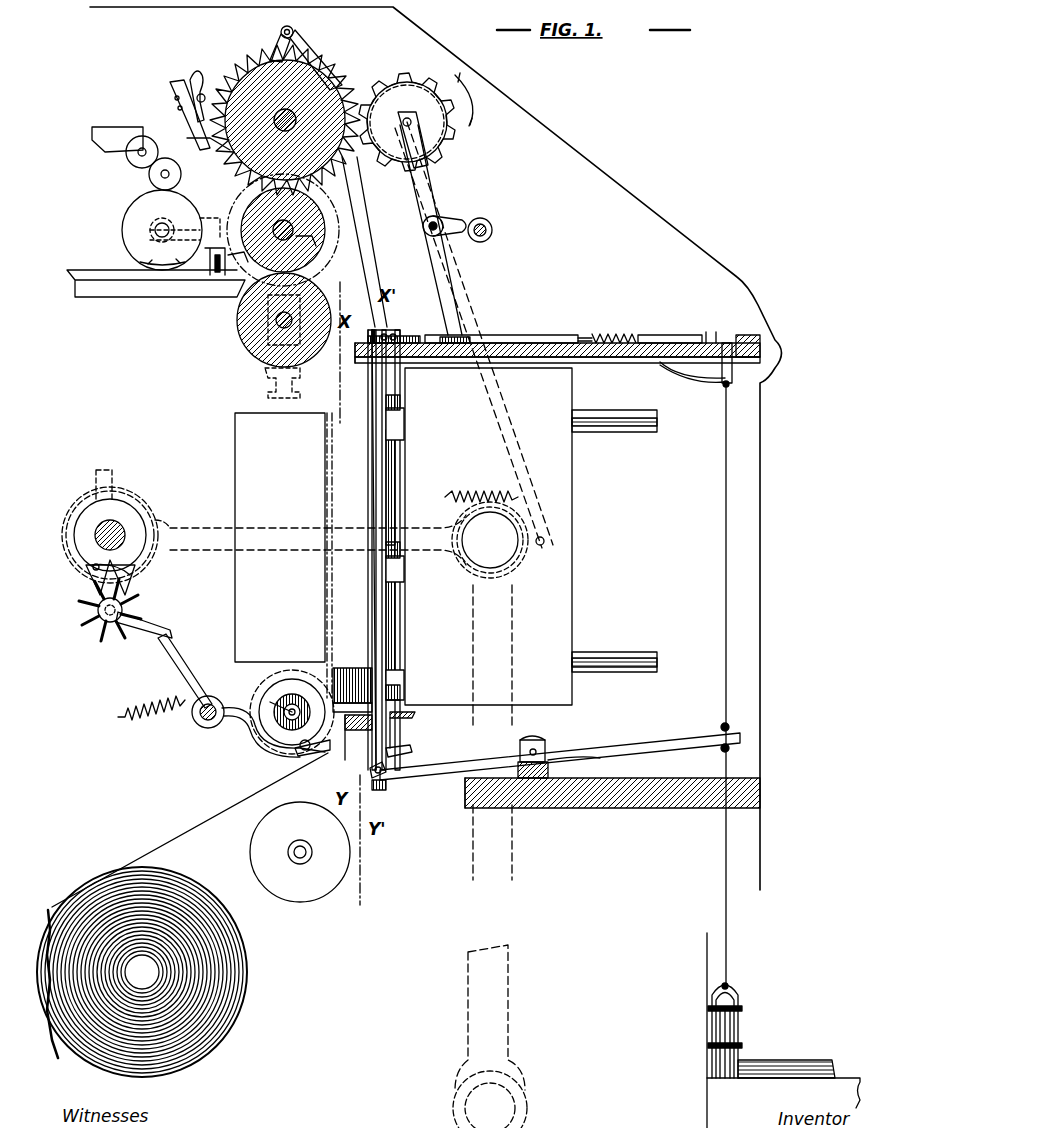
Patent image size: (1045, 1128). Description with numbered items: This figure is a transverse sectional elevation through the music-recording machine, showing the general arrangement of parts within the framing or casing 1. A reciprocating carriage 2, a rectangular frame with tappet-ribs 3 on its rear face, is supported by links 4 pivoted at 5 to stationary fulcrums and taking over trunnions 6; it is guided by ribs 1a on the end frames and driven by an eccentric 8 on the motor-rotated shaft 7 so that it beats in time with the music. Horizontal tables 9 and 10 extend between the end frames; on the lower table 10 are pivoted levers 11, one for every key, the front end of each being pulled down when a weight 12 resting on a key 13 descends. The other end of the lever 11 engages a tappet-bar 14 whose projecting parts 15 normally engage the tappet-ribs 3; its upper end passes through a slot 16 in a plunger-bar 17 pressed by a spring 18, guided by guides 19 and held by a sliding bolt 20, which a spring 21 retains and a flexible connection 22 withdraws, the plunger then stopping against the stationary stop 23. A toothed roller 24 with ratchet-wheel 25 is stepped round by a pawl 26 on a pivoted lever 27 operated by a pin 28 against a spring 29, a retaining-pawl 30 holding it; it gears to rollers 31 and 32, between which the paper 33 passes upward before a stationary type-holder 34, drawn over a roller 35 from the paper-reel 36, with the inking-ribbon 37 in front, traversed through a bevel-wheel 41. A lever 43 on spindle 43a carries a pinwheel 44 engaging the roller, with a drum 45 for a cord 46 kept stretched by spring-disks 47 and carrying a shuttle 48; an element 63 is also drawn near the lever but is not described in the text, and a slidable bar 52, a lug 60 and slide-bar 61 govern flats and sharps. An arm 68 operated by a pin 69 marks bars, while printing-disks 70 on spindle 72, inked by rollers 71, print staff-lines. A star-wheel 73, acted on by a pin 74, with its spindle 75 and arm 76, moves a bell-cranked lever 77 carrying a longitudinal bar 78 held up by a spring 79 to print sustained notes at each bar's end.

The framing or casing 1 is at (436, 448).
The ribs 1a is at (628, 430).
The reciprocating carriage 2 is at (572, 485).
The tappet-ribs 3 is at (398, 412).
The links 4 is at (502, 700).
The pivot 5 is at (500, 1112).
The trunnions 6 is at (475, 548).
The shaft 7 is at (115, 530).
The eccentric 8 is at (80, 500).
The upper table 9 is at (593, 363).
The lower table 10 is at (705, 788).
The levers 11 is at (410, 770).
The weight 12 is at (736, 1028).
The key 13 is at (822, 1050).
The tappet-bar 14 is at (390, 505).
The projecting parts 15 is at (395, 440).
The slots 16 is at (400, 334).
The plunger-bars 17 is at (560, 330).
The spring 18 is at (645, 334).
The guides 19 is at (612, 334).
The sliding bolt 20 is at (735, 365).
The spring 21 is at (680, 378).
The flexible connection 22 is at (722, 574).
The stationary stop 23 is at (748, 340).
The roller 24 is at (322, 72).
The ratchet-wheel 25 is at (255, 60).
The pawl 26 is at (287, 26).
The pivoted lever 27 is at (383, 254).
The pin 28 is at (541, 546).
The spring 29 is at (500, 490).
The retaining-pawl 30 is at (175, 105).
The roller 31 is at (248, 207).
The roller 32 is at (255, 338).
The paper 33 is at (328, 392).
The stationary type-holder 34 is at (280, 537).
The roller 35 is at (260, 700).
The paper-reel 36 is at (205, 872).
The inking-ribbon 37 is at (362, 440).
The bevel-wheel 41 is at (262, 688).
The lever 43 is at (440, 276).
The spindle 43a is at (440, 214).
The pinwheel 44 is at (440, 140).
The drum 45 is at (407, 106).
The cord 46 is at (350, 626).
The spring-disks 47 is at (330, 886).
The shuttle 48 is at (333, 668).
The frame or bar 52 is at (345, 722).
The lug 60 is at (403, 741).
The slide-bar 61 is at (330, 752).
The weight 63 is at (490, 240).
The arm 68 is at (222, 276).
The pin 69 is at (312, 250).
The printing-disks 70 is at (135, 250).
The ink-supply rollers 71 is at (130, 160).
The spindle 72 is at (164, 230).
The star-wheel 73 is at (105, 625).
The pin 74 is at (128, 562).
The spindle 75 is at (84, 630).
The arm 76 is at (160, 635).
The bell-cranked lever 77 is at (200, 650).
The longitudinal bar 78 is at (405, 720).
The spring 79 is at (151, 711).